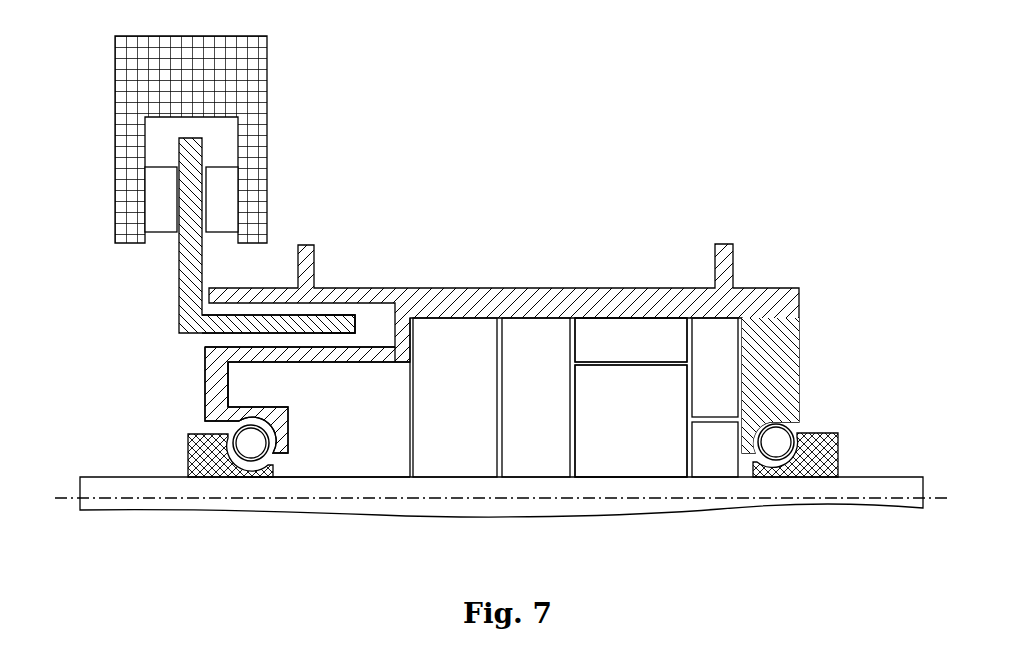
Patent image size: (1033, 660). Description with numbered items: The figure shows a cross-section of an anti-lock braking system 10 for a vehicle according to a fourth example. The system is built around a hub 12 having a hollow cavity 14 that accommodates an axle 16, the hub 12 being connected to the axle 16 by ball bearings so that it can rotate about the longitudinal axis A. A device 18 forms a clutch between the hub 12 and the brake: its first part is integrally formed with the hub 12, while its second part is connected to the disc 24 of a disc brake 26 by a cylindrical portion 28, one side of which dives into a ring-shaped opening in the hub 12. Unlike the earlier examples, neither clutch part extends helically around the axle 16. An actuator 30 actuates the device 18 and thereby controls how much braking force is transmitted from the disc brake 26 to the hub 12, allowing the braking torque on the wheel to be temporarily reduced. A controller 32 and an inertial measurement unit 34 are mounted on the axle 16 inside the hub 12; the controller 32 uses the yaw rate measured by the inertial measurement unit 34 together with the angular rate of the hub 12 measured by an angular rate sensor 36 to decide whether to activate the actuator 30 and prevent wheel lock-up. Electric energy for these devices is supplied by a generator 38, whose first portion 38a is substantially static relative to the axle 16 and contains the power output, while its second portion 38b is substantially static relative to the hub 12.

The anti-lock braking system 10 is at (582, 48).
The hub 12 is at (584, 288).
The hollow cavity 14 is at (369, 452).
The axle 16 is at (160, 477).
The device 18 is at (166, 382).
The disc 24 is at (180, 276).
The disc brake 26 is at (307, 101).
The cylindrical portion 28 is at (264, 316).
The actuator 30 is at (346, 330).
The controller 32 is at (466, 413).
The inertial measurement unit 34 is at (547, 413).
The angular rate sensor 36 is at (715, 449).
The generator 38 is at (660, 224).
The first portion 38a is at (648, 433).
The second portion 38b is at (648, 350).